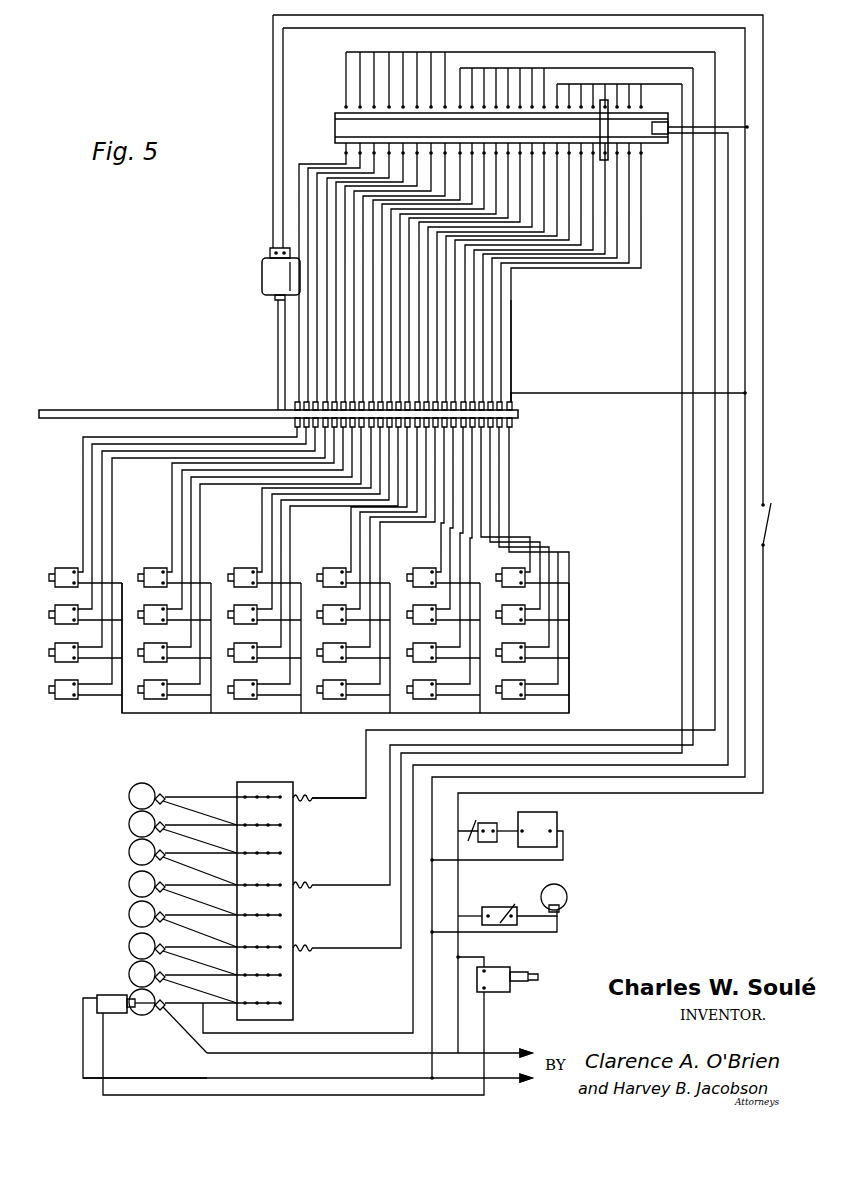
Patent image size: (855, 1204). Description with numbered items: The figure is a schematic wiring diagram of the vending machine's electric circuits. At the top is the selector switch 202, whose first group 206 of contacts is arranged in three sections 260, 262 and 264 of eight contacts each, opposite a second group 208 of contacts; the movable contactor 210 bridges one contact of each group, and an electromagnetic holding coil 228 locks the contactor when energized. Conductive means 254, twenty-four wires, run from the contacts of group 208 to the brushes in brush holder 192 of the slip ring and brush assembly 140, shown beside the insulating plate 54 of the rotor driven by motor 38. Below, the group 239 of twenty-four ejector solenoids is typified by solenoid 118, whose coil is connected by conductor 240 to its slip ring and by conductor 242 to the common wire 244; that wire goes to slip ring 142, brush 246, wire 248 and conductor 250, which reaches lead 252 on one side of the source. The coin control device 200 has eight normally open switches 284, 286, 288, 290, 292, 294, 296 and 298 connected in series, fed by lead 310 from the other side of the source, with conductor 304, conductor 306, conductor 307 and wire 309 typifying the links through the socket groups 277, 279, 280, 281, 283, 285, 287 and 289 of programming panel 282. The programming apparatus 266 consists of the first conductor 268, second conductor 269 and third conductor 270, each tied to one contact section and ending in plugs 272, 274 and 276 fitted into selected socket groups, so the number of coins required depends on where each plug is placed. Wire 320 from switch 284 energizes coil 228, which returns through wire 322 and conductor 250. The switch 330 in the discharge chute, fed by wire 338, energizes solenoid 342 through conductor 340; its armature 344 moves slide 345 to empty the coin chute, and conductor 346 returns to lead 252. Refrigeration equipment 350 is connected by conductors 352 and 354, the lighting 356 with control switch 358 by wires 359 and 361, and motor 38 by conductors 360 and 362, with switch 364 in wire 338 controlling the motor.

The electric motor 38 is at (262, 276).
The plate 54 is at (116, 410).
The solenoid 118 is at (323, 575).
The slip ring and brush assembly 140 is at (518, 410).
The slip ring 142 is at (512, 430).
The brush holder 192 is at (297, 402).
The coin control device 200 is at (130, 800).
The selector switch 202 is at (336, 113).
The first group of contacts 206 is at (633, 110).
The second group of contacts 208 is at (642, 157).
The movable contactor 210 is at (600, 130).
The electromagnetic coil 228 is at (345, 130).
The group of solenoids 239 is at (236, 575).
The electrical conductor 240 is at (351, 540).
The electrical conductor 242 is at (370, 578).
The wire 244 is at (513, 535).
The brush 246 is at (511, 393).
The wire 248 is at (612, 393).
The conductor 250 is at (763, 415).
The lead 252 is at (500, 1080).
The conductive means 254 is at (508, 318).
The section of contacts 260 is at (390, 52).
The section of contacts 262 is at (512, 68).
The section of contacts 264 is at (608, 85).
The programming apparatus 266 is at (306, 797).
The first conductor 268 is at (682, 305).
The second conductor 269 is at (693, 340).
The third conductor 270 is at (715, 378).
The plug 272 is at (297, 946).
The plug 274 is at (306, 885).
The plug 276 is at (295, 793).
The group of sockets 277 is at (290, 1003).
The group of sockets 279 is at (222, 959).
The group of sockets 280 is at (222, 928).
The group of sockets 281 is at (222, 898).
The programming panel 282 is at (290, 975).
The group of sockets 283 is at (222, 867).
The control switch 284 is at (133, 990).
The group of sockets 285 is at (222, 837).
The control switch 286 is at (130, 965).
The group of sockets 287 is at (222, 808).
The control switch 288 is at (130, 936).
The group of sockets 289 is at (242, 782).
The control switch 290 is at (130, 910).
The control switch 292 is at (130, 882).
The control switch 294 is at (130, 854).
The control switch 296 is at (130, 826).
The control switch 298 is at (180, 778).
The conductor 304 is at (202, 1040).
The conductor 306 is at (222, 987).
The conductor 307 is at (200, 968).
The wire 309 is at (213, 940).
The lead 310 is at (500, 1050).
The wire 320 is at (365, 1033).
The wire 322 is at (742, 127).
The switch 330 is at (505, 992).
The wire 338 is at (763, 470).
The conductor 340 is at (335, 1095).
The solenoid 342 is at (97, 995).
The armature 344 is at (120, 995).
The slide 345 is at (142, 1012).
The conductor 346 is at (182, 1078).
The refrigeration equipment 350 is at (560, 830).
The electric conductor 352 is at (470, 830).
The electric conductor 354 is at (563, 860).
The lighting 356 is at (565, 900).
The control switch 358 is at (505, 913).
The wire 359 is at (468, 907).
The conductor 360 is at (272, 210).
The wire 361 is at (483, 932).
The conductor 362 is at (286, 178).
The switch 364 is at (769, 550).